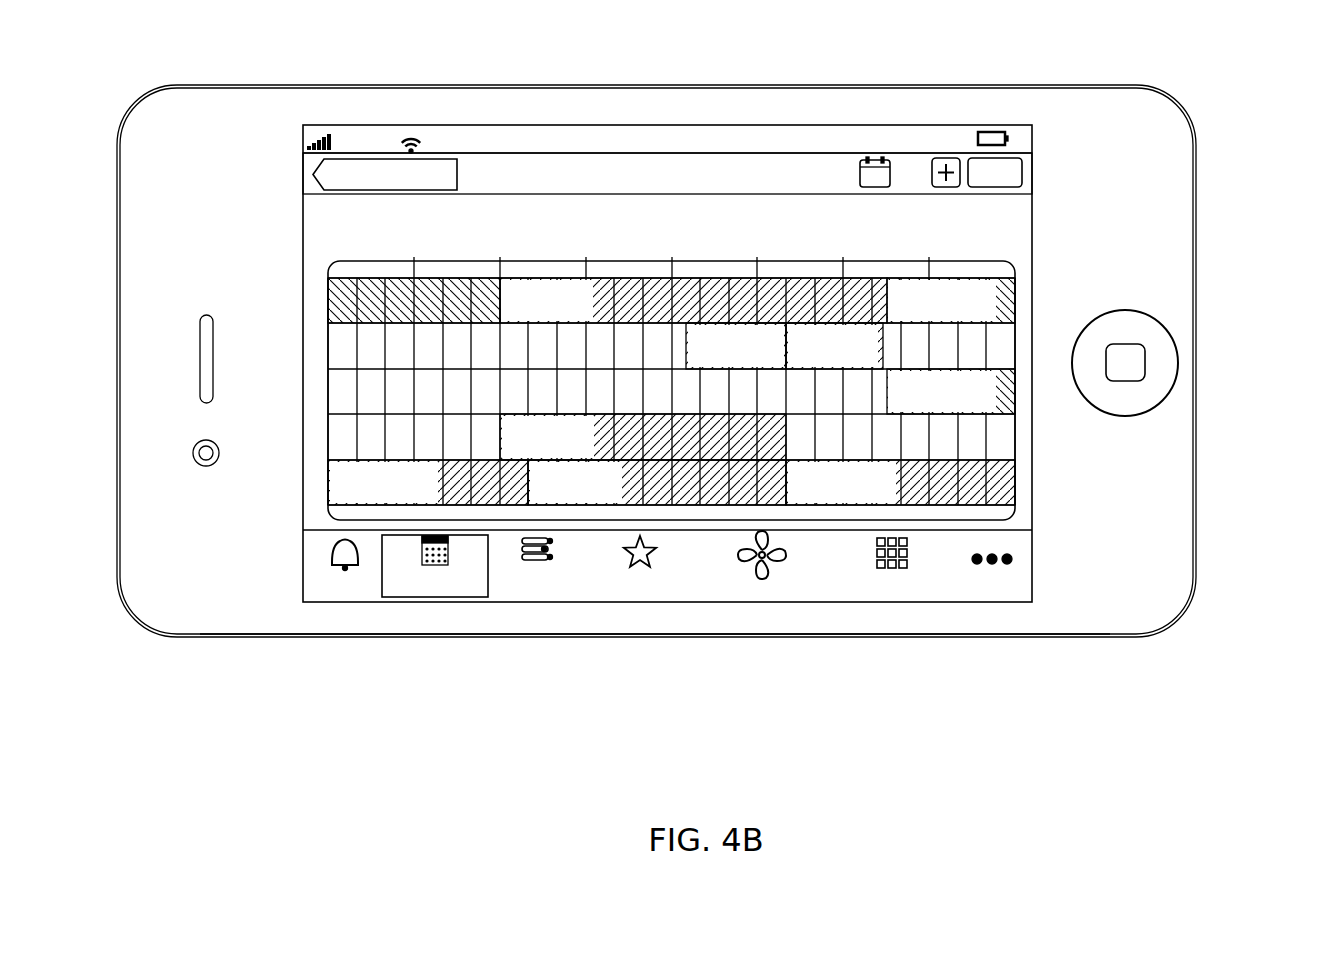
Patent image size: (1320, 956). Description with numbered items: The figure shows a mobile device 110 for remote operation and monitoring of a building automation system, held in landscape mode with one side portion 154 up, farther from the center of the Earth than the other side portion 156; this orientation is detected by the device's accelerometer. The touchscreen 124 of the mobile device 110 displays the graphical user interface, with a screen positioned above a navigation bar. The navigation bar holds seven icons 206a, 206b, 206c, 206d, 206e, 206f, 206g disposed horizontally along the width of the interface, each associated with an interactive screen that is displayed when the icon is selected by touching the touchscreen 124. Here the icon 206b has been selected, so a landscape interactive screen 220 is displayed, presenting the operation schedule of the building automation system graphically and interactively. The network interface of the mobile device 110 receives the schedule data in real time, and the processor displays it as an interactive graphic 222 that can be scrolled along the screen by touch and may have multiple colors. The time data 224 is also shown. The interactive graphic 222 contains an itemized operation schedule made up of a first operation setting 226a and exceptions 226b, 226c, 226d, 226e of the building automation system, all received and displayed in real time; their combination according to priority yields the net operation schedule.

The mobile device 110 is at (1197, 173).
The side portion 154 is at (1042, 76).
The side portion 156 is at (240, 642).
The touchscreen 124 is at (1033, 173).
The landscape interactive screen 220 is at (317, 233).
The interactive graphic 222 is at (328, 288).
The time data 224 is at (340, 222).
The first operation setting 226a is at (330, 310).
The exception 226b is at (332, 355).
The exception 226c is at (332, 395).
The exception 226d is at (343, 448).
The exception 226e is at (330, 490).
The icon 206a is at (342, 597).
The icon 206b is at (433, 597).
The icon 206c is at (577, 592).
The icon 206d is at (663, 557).
The icon 206e is at (825, 590).
The icon 206f is at (930, 590).
The icon 206g is at (1000, 597).